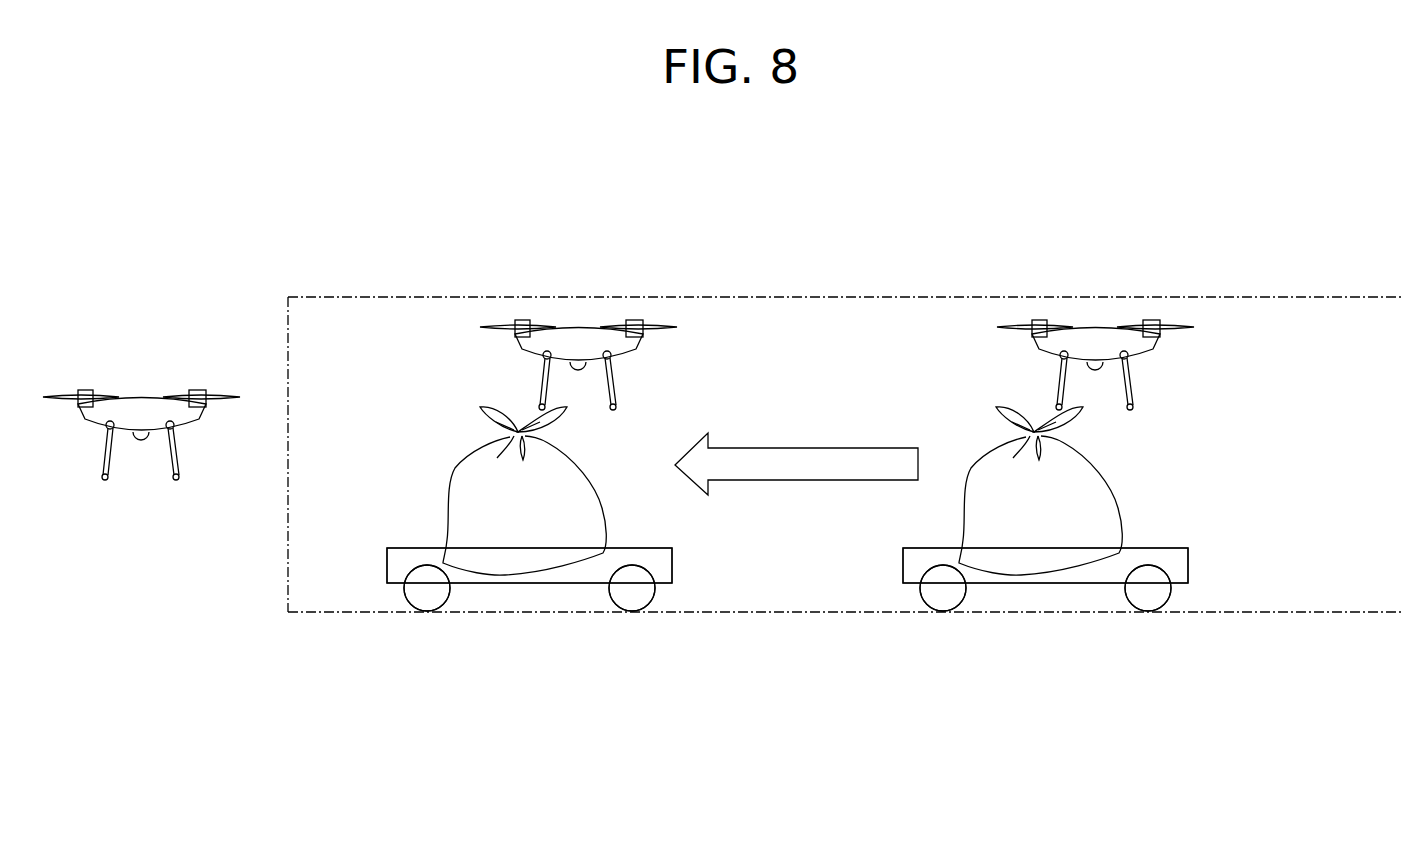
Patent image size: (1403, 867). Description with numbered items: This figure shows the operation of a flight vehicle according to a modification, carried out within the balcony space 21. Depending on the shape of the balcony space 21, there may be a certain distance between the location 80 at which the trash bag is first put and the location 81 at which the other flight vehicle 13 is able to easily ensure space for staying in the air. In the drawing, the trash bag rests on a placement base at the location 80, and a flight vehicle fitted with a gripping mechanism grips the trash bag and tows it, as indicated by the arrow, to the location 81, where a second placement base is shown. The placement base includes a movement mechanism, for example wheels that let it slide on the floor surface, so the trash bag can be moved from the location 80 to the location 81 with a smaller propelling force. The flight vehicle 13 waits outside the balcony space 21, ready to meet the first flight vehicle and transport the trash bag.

The flight vehicle 13 is at (152, 377).
The balcony space 21 is at (397, 297).
The location 80 is at (1042, 630).
The location 81 is at (495, 632).